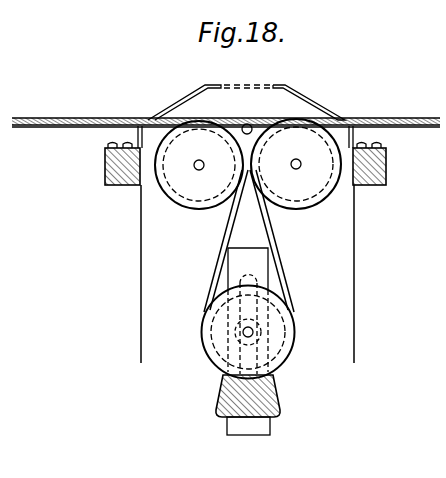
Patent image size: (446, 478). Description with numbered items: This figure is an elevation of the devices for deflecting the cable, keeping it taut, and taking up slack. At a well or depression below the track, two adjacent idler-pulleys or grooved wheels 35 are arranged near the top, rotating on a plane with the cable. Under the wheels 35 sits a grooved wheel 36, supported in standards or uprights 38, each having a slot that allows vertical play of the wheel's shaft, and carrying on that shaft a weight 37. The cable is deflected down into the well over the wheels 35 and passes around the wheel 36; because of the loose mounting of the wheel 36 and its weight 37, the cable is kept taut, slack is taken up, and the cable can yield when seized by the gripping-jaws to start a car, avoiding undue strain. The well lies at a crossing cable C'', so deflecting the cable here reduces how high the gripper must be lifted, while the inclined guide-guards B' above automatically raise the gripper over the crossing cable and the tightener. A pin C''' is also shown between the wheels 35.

The idler-pulleys or grooved wheels 35 is at (248, 164).
The grooved wheel 36 is at (290, 354).
The weight 37 is at (281, 413).
The standards or uprights 38 is at (248, 311).
The guide-guards B' is at (246, 102).
The crossing cable C'' is at (226, 113).
The pin C''' is at (248, 119).